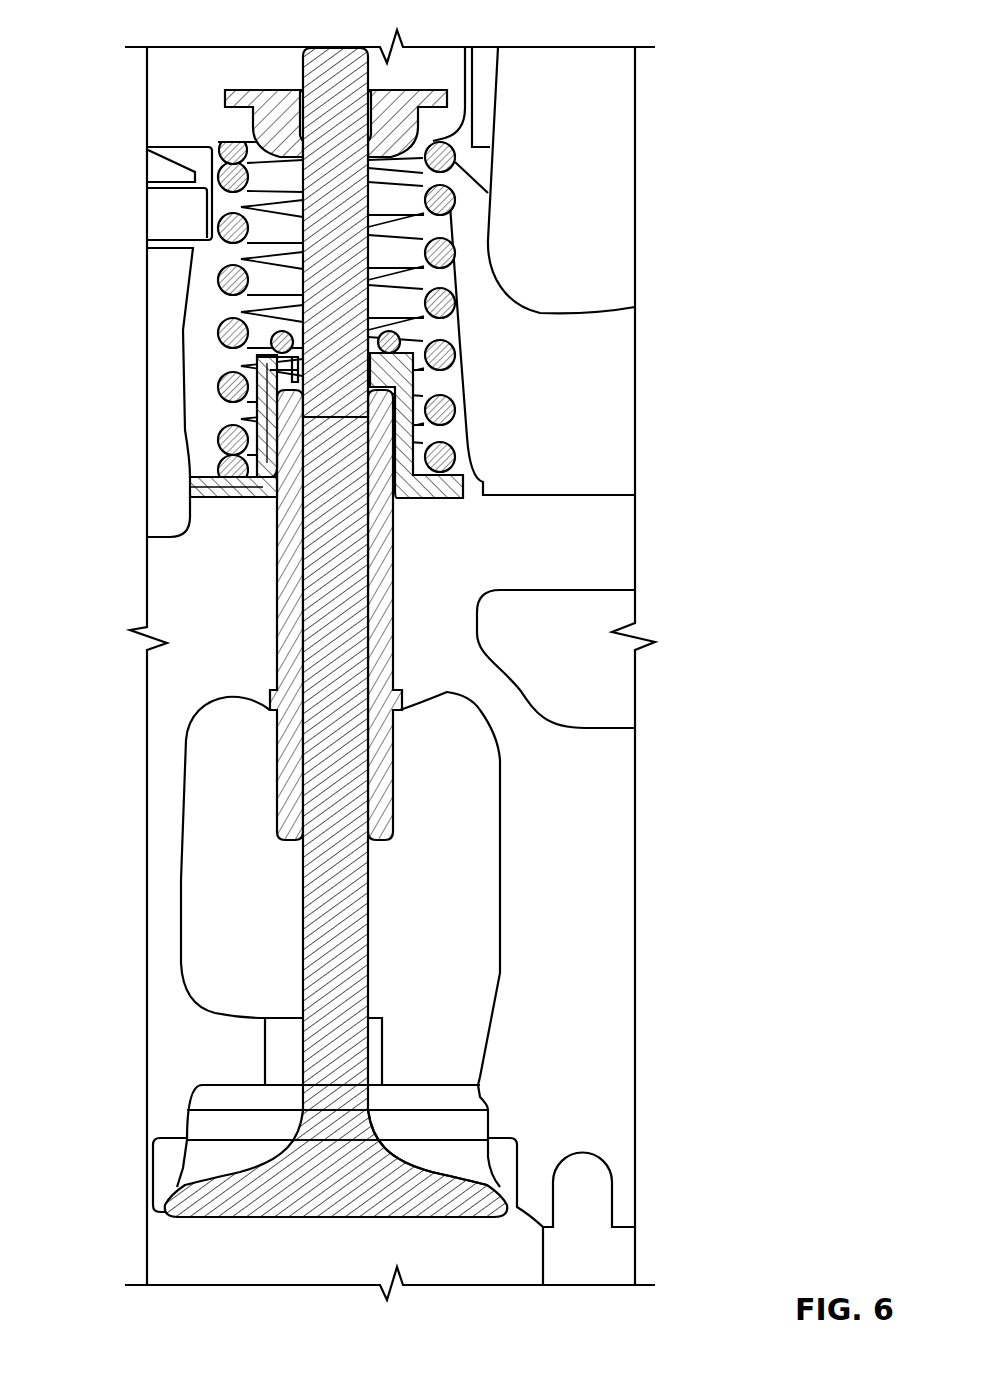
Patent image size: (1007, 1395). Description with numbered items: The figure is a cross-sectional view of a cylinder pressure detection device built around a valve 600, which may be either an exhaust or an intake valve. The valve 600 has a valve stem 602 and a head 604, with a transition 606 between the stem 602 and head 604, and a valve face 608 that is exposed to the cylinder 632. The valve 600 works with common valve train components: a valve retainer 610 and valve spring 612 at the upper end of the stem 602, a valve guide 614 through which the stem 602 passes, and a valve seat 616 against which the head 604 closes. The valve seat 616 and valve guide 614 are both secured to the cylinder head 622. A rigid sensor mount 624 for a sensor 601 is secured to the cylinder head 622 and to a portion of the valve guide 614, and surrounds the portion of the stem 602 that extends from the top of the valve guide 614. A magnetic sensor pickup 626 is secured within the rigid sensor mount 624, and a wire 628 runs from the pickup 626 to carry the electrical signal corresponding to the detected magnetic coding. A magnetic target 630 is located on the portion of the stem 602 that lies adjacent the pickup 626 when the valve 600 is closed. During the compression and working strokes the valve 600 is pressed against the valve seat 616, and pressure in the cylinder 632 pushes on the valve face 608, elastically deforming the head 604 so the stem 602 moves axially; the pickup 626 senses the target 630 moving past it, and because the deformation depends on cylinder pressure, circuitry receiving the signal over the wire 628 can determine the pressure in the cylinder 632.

The valve 600 is at (337, 210).
The sensor 601 is at (293, 367).
The valve stem 602 is at (337, 590).
The head 604 is at (463, 1210).
The transition 606 is at (410, 1163).
The valve face 608 is at (283, 1218).
The valve retainer 610 is at (263, 118).
The valve spring 612 is at (233, 228).
The valve guide 614 is at (290, 545).
The valve seat 616 is at (162, 1168).
The cylinder head 622 is at (208, 637).
The rigid sensor mount 624 is at (462, 428).
The magnetic sensor pickup 626 is at (262, 366).
The wire 628 is at (213, 482).
The magnetic target 630 is at (335, 370).
The cylinder 632 is at (388, 1257).